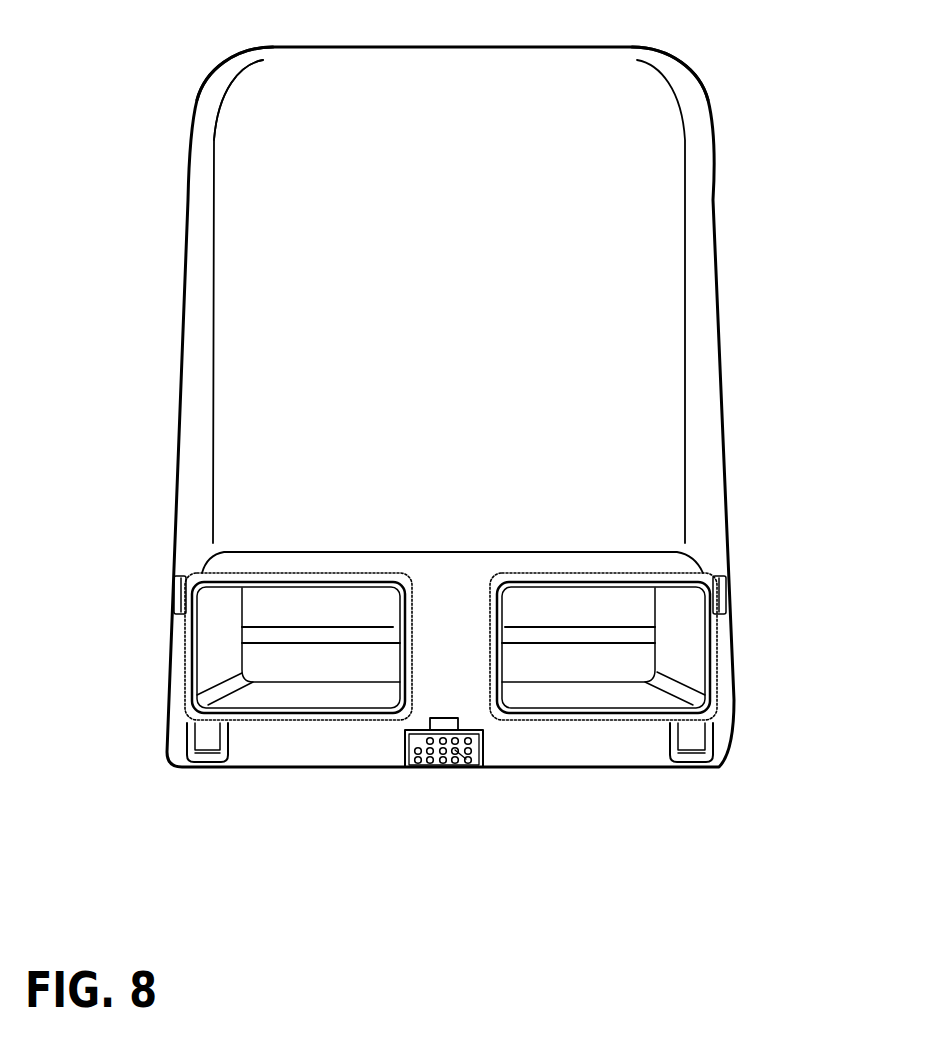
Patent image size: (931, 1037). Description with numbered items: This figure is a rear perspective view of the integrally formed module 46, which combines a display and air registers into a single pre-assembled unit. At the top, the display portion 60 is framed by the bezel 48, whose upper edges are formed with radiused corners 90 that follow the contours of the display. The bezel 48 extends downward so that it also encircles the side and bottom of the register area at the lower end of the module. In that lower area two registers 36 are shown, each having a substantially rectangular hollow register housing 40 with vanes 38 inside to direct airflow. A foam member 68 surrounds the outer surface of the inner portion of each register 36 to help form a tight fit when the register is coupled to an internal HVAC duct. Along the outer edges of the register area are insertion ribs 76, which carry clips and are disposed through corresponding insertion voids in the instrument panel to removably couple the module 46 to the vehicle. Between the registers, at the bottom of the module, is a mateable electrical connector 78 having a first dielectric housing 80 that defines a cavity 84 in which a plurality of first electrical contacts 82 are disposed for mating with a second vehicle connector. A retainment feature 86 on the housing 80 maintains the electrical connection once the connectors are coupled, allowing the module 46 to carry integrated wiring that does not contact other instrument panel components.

The register 36 is at (292, 680).
The vane 38 is at (297, 635).
The register housing 40 is at (215, 633).
The module 46 is at (724, 325).
The bezel 48 is at (628, 295).
The display portion 60 is at (270, 243).
The foam member 68 is at (305, 580).
The insertion rib 76 is at (173, 582).
The electrical connector 78 is at (406, 768).
The first dielectric housing 80 is at (478, 750).
The first electrical contacts 82 is at (443, 763).
The cavity 84 is at (467, 760).
The retainment feature 86 is at (418, 723).
The radiused corners 90 is at (233, 53).